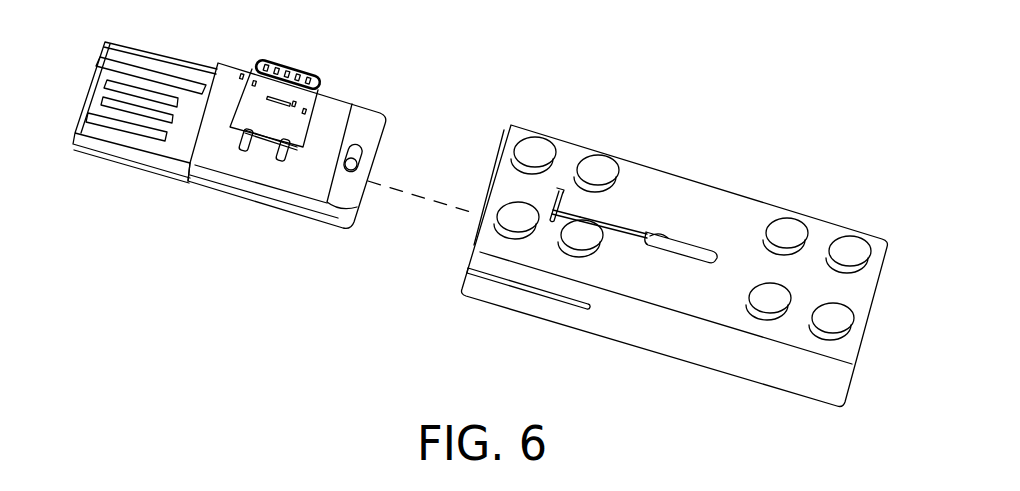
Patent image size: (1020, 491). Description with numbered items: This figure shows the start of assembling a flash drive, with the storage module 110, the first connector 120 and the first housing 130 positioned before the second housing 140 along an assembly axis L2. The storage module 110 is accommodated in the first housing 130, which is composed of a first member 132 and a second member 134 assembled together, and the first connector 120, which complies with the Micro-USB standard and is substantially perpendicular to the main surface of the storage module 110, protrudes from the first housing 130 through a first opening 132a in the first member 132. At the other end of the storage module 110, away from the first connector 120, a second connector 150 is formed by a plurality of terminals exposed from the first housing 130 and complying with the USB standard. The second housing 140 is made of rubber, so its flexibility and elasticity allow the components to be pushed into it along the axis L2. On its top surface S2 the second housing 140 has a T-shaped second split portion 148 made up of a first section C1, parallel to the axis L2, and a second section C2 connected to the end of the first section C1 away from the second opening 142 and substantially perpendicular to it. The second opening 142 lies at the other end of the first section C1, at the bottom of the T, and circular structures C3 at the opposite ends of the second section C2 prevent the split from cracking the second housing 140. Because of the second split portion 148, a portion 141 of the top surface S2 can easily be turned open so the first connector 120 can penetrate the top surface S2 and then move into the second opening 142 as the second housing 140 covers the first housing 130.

The storage module 110 is at (170, 143).
The second connector 150 is at (138, 90).
The first connector 120 is at (300, 117).
The first housing 130 is at (287, 209).
The first member 132 is at (273, 190).
The first opening 132a is at (265, 130).
The second member 134 is at (257, 202).
The axis L2 is at (423, 197).
The second housing 140 is at (675, 252).
The portion 141 is at (577, 219).
The second opening 142 is at (677, 243).
The second split portion 148 is at (609, 141).
The first section C1 is at (628, 224).
The second section C2 is at (579, 208).
The circular structure C3 is at (562, 188).
The top surface S2 is at (750, 215).